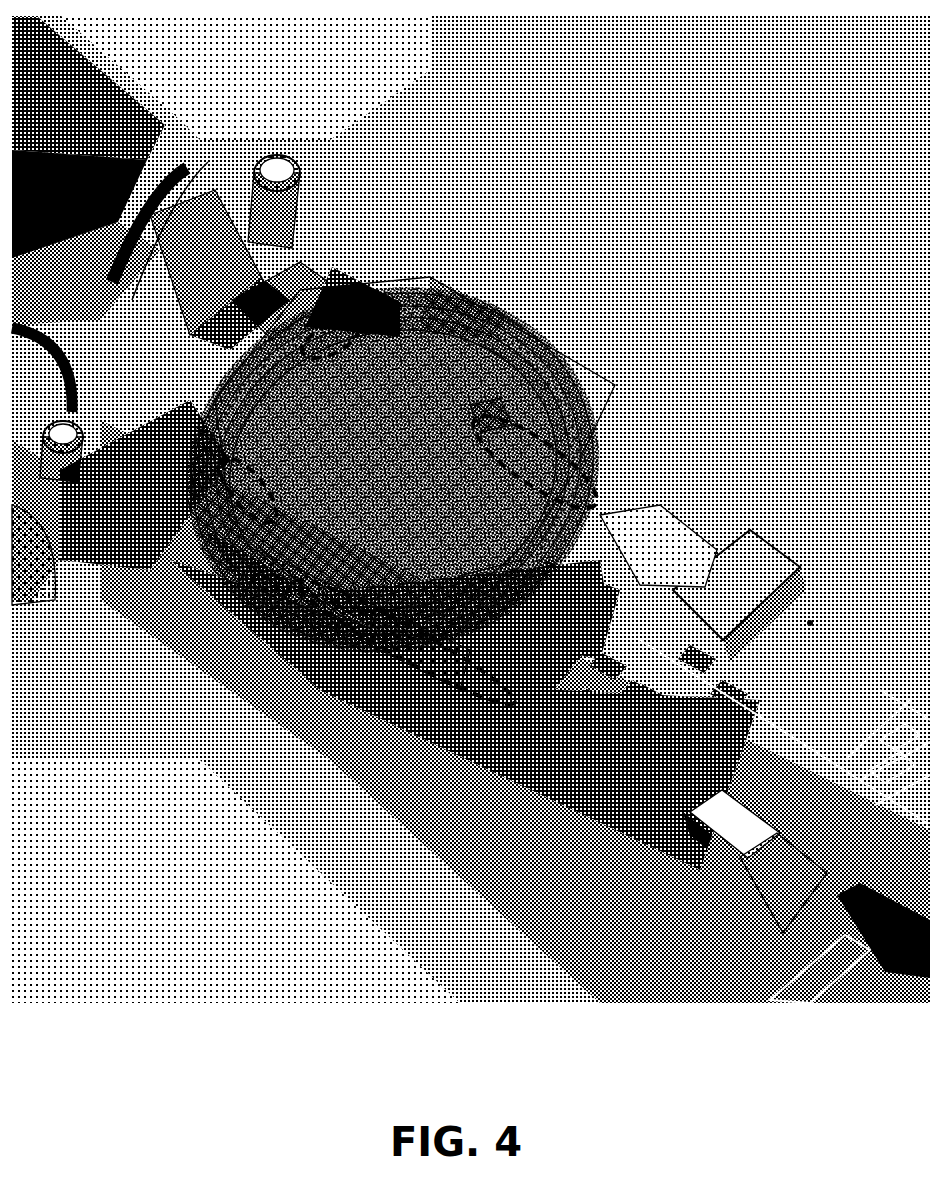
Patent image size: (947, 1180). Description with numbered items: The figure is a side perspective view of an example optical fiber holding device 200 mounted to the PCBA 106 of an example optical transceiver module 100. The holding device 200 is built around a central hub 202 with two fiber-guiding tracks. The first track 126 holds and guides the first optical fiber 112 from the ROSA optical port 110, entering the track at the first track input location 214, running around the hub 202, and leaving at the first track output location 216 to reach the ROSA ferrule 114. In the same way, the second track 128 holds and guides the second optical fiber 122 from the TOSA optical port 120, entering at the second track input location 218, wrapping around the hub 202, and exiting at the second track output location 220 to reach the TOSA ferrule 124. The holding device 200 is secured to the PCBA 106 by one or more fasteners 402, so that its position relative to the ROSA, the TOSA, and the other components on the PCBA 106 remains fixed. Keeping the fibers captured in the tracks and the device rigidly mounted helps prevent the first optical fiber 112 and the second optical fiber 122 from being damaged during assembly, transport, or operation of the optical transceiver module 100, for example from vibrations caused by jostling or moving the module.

The optical transceiver module 100 is at (84, 58).
The PCBA 106 is at (703, 930).
The ROSA optical port 110 is at (735, 862).
The first optical fiber 112 is at (645, 790).
The ROSA ferrule 114 is at (147, 448).
The TOSA optical port 120 is at (683, 548).
The second optical fiber 122 is at (605, 515).
The TOSA ferrule 124 is at (282, 287).
The first track 126 is at (482, 415).
The second track 128 is at (292, 576).
The optical fiber holding device 200 is at (582, 328).
The hub 202 is at (410, 418).
The first track input location 214 is at (495, 700).
The first track output location 216 is at (248, 520).
The second track input location 218 is at (555, 455).
The second track output location 220 is at (345, 328).
The fasteners 402 is at (350, 705).